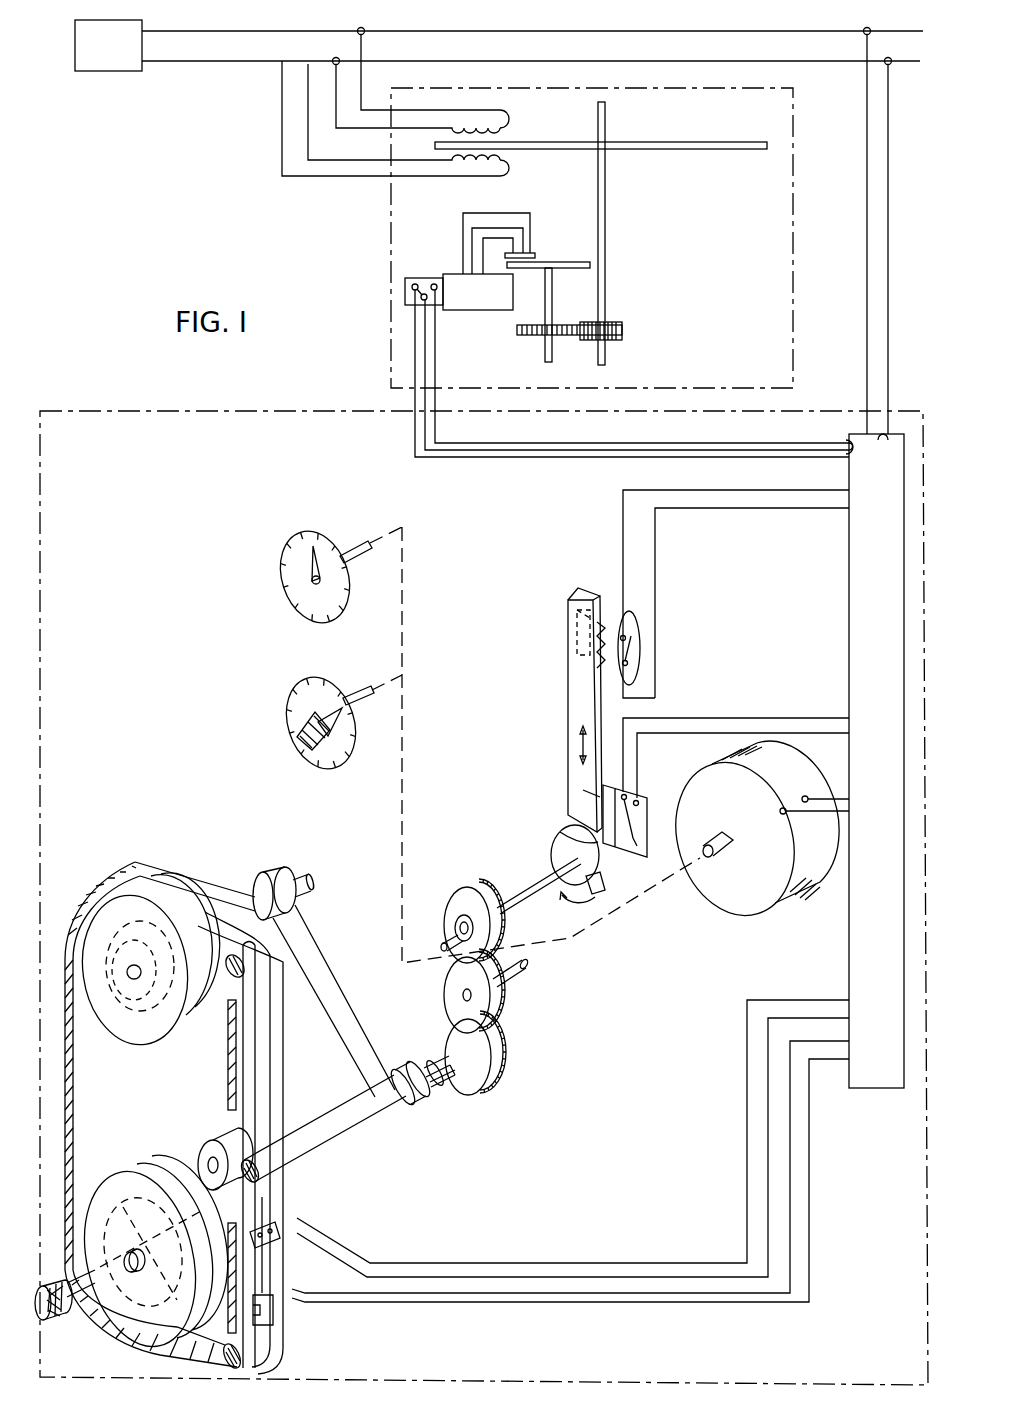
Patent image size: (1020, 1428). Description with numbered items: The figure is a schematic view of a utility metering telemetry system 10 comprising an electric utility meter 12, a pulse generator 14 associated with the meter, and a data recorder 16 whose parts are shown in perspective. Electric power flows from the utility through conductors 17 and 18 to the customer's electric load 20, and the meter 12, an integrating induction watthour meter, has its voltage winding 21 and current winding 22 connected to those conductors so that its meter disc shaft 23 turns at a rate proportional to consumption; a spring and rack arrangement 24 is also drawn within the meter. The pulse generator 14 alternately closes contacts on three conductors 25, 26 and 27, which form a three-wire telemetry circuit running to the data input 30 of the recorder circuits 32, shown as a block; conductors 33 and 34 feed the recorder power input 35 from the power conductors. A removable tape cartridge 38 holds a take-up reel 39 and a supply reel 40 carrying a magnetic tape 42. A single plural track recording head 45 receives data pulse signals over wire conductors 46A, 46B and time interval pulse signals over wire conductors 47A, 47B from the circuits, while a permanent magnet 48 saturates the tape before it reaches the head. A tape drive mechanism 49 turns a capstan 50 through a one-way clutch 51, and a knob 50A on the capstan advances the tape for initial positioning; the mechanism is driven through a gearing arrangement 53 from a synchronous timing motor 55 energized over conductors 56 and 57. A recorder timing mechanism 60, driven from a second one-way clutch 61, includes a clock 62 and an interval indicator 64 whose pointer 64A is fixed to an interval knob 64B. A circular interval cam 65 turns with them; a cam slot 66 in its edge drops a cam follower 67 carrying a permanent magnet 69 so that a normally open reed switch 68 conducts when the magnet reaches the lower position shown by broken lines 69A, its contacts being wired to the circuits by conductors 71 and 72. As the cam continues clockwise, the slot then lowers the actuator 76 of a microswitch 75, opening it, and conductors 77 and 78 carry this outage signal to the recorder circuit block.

The telemetry system 10 is at (320, 226).
The electric utility meter 12 is at (793, 198).
The pulse generator 14 is at (492, 302).
The data recorder 16 is at (282, 410).
The conductor 17 is at (488, 30).
The conductor 18 is at (555, 60).
The electric load 20 is at (125, 55).
The voltage winding 21 is at (507, 118).
The current winding 22 is at (510, 172).
The meter disc shaft 23 is at (605, 200).
The spiral spring and rack 24 is at (546, 236).
The conductor 25 is at (518, 443).
The conductor 26 is at (495, 452).
The conductor 27 is at (445, 460).
The data input 30 is at (848, 446).
The recorder circuits 32 is at (890, 609).
The conductor 33 is at (867, 322).
The conductor 34 is at (888, 328).
The recorder power input 35 is at (884, 441).
The tape cartridge 38 is at (124, 1113).
The take-up reel 39 is at (165, 1043).
The supply reel 40 is at (107, 1185).
The magnetic tape 42 is at (250, 1055).
The plural track recording head 45 is at (276, 1248).
The wire conductor 46A is at (546, 1293).
The wire conductor 46B is at (672, 1302).
The wire conductor 47A is at (444, 1263).
The wire conductor 47B is at (531, 1277).
The permanent magnet 48 is at (273, 1306).
The tape drive mechanism 49 is at (404, 1016).
The capstan 50 is at (348, 1133).
The knob 50A is at (45, 1305).
The one-way clutch 51 is at (440, 1095).
The gearing arrangement 53 is at (512, 1011).
The synchronous timing motor 55 is at (728, 887).
The conductor 56 is at (810, 797).
The conductor 57 is at (832, 812).
The recorder timing mechanism 60 is at (526, 799).
The second one-way clutch 61 is at (452, 918).
The clock 62 is at (330, 547).
The interval indicator 64 is at (328, 690).
The pointer 64A is at (350, 741).
The interval knob 64B is at (297, 741).
The circular interval cam 65 is at (560, 850).
The cam slot 66 is at (596, 880).
The cam follower 67 is at (570, 713).
The reed switch 68 is at (625, 628).
The permanent magnet 69 is at (600, 620).
The broken lines 69A is at (600, 672).
The conductor 71 is at (705, 507).
The conductor 72 is at (796, 490).
The microswitch 75 is at (652, 845).
The actuator 76 is at (595, 795).
The conductor 77 is at (692, 718).
The conductor 78 is at (748, 733).